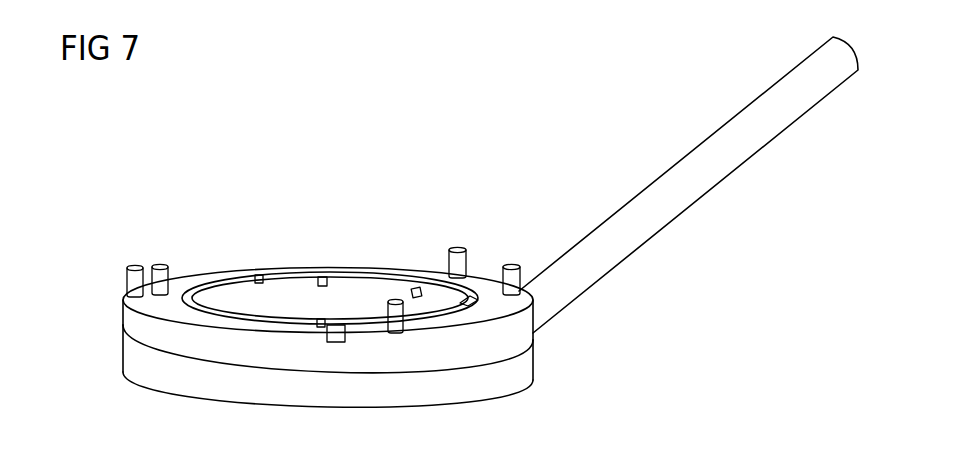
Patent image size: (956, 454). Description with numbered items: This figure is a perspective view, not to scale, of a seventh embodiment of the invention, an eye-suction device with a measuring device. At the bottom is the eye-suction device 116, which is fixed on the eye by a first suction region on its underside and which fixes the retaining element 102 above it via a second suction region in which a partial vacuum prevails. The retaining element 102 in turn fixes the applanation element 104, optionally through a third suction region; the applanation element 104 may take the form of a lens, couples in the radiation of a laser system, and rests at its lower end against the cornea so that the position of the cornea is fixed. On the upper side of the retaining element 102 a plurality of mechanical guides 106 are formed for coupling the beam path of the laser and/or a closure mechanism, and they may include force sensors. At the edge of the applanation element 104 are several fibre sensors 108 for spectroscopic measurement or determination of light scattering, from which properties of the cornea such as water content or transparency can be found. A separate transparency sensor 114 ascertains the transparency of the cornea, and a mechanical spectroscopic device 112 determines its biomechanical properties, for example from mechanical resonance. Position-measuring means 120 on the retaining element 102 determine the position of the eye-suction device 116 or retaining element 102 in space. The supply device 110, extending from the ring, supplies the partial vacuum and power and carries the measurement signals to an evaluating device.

The retaining element 102 is at (132, 328).
The applanation element 104 is at (245, 294).
The mechanical guides 106 is at (162, 264).
The fibre sensors 108 is at (413, 289).
The supply device 110 is at (713, 147).
The mechanical spectroscopic device 112 is at (469, 297).
The transparency sensor 114 is at (345, 333).
The eye-suction device 116 is at (132, 365).
The position-measuring means 120 is at (133, 265).